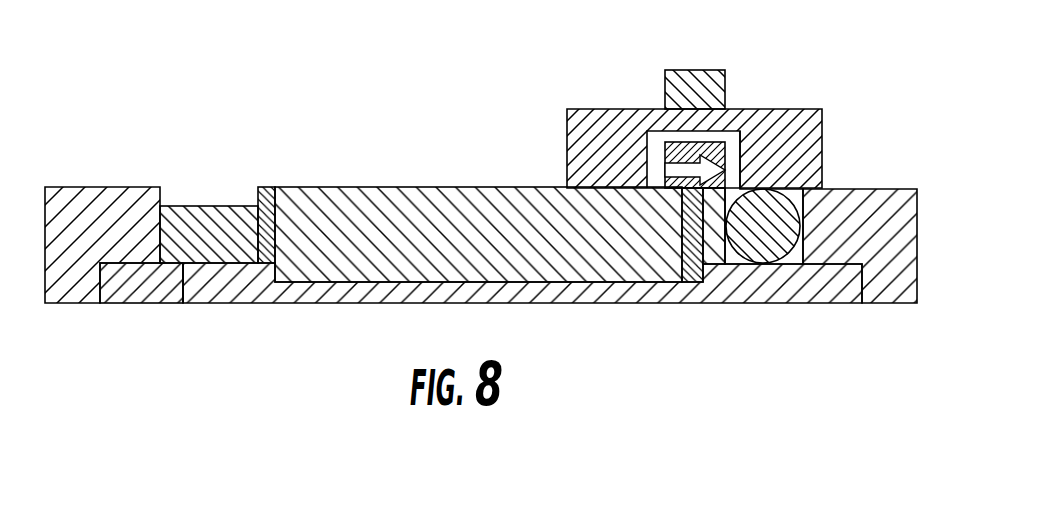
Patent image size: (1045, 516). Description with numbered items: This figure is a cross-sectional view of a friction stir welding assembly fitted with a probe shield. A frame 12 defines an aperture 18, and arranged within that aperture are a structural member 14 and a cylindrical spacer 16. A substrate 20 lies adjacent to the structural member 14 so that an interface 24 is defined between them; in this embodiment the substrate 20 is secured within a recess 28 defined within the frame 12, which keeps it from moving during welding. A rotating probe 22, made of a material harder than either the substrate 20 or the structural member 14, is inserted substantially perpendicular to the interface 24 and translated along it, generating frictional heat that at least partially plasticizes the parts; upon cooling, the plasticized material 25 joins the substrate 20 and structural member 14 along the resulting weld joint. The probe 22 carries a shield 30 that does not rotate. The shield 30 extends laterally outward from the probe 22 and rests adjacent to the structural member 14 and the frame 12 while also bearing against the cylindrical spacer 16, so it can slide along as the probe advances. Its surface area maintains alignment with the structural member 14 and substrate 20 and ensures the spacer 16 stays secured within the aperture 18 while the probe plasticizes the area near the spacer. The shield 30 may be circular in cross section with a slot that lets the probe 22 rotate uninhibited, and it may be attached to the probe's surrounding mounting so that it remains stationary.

The frame 12 is at (898, 203).
The structural member 14 is at (268, 200).
The spacer 16 is at (217, 215).
The aperture 18 is at (162, 200).
The substrate 20 is at (213, 288).
The probe 22 is at (753, 130).
The interface 24 is at (183, 303).
The plasticized material 25 is at (442, 208).
The recess 28 is at (102, 278).
The shield 30 is at (610, 125).